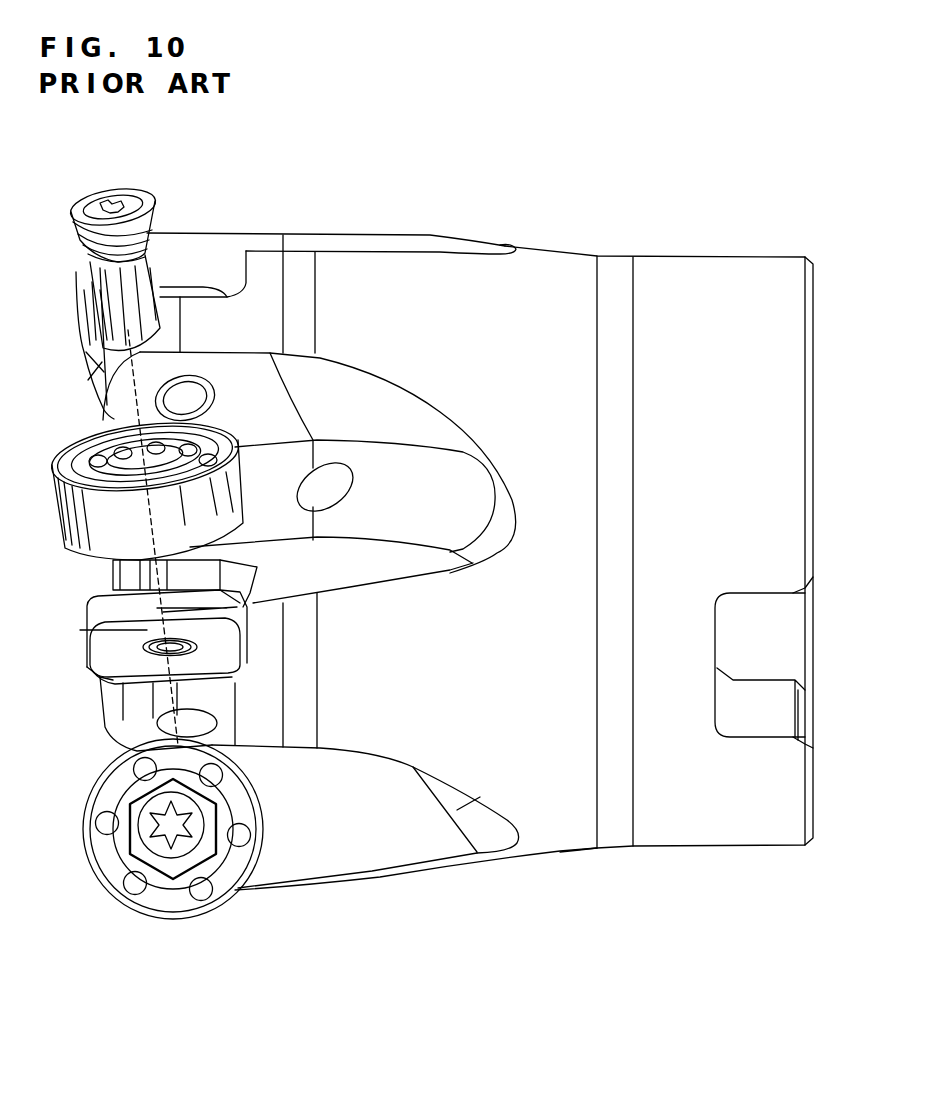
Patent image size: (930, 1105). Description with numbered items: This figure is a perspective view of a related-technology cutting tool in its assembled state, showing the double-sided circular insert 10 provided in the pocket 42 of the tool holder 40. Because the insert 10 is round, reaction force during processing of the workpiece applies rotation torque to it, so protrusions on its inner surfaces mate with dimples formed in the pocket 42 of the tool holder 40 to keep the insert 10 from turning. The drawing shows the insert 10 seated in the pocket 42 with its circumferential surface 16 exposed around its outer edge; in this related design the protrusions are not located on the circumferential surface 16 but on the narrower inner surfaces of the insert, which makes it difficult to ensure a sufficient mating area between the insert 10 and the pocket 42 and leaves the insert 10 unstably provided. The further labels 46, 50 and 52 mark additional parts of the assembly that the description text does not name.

The double-sided circular insert 10 is at (210, 250).
The circumferential surface 16 is at (185, 202).
The tool holder 40 is at (702, 254).
The pocket 42 is at (220, 628).
The through hole 46 is at (183, 671).
The screw 50 is at (72, 222).
The lower block 52 is at (92, 631).